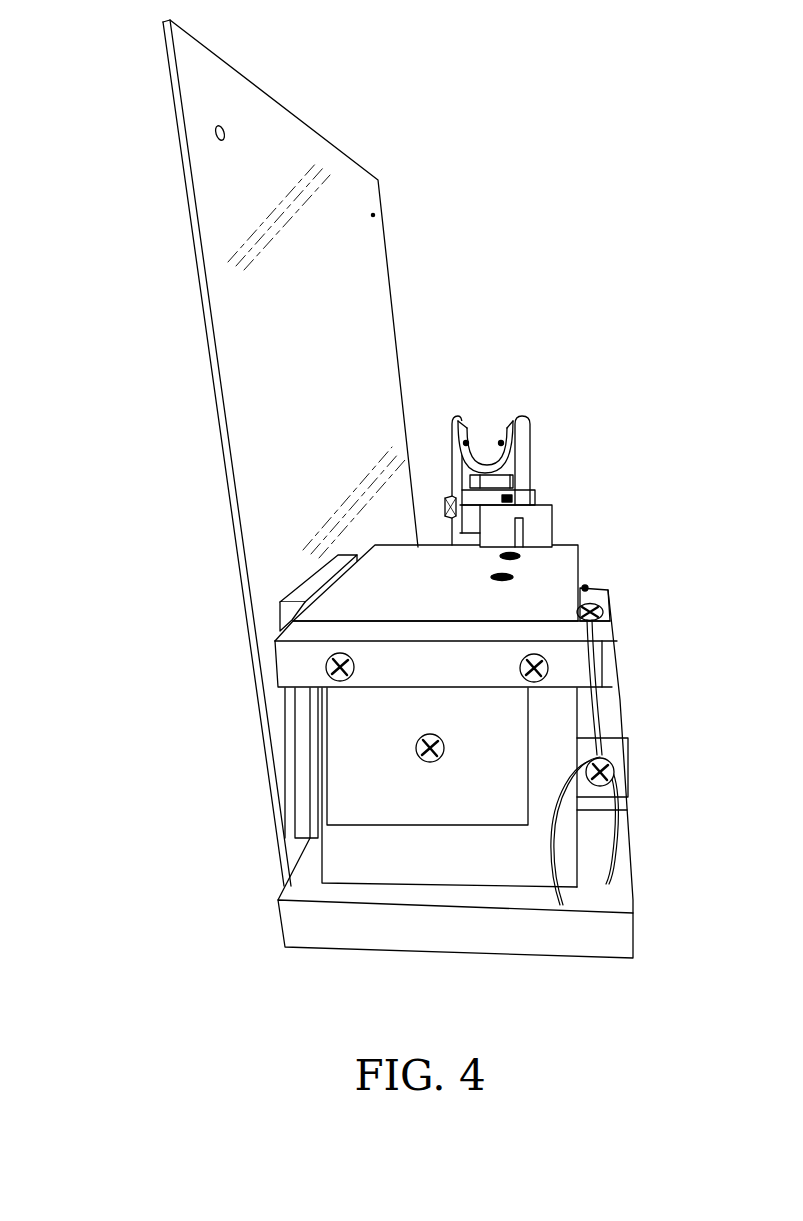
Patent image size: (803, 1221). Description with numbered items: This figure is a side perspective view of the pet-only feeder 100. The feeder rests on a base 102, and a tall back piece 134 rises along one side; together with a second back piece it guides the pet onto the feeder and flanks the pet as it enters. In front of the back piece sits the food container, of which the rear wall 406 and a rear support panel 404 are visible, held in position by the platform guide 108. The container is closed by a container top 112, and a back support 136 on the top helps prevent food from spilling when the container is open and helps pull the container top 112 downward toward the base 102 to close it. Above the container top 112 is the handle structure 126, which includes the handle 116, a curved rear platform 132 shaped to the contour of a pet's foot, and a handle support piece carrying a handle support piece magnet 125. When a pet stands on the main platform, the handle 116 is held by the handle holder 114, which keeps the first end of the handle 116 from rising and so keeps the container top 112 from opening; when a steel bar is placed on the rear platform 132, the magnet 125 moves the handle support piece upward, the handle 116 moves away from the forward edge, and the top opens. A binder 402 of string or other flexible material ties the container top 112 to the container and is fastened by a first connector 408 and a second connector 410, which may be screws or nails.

The pet-only feeder 100 is at (110, 53).
The back piece 134 is at (253, 352).
The back support 136 is at (300, 596).
The container top 112 is at (538, 590).
The handle 116 is at (498, 548).
The handle holder 114 is at (556, 530).
The handle support piece magnet 125 is at (505, 478).
The handle structure 126 is at (530, 458).
The rear platform 132 is at (487, 440).
The binder 402 is at (620, 706).
The first connector 408 is at (589, 588).
The platform guide 108 is at (618, 728).
The second connector 410 is at (612, 775).
The rear wall 406 is at (465, 855).
The rear support panel 404 is at (382, 790).
The base 102 is at (572, 935).